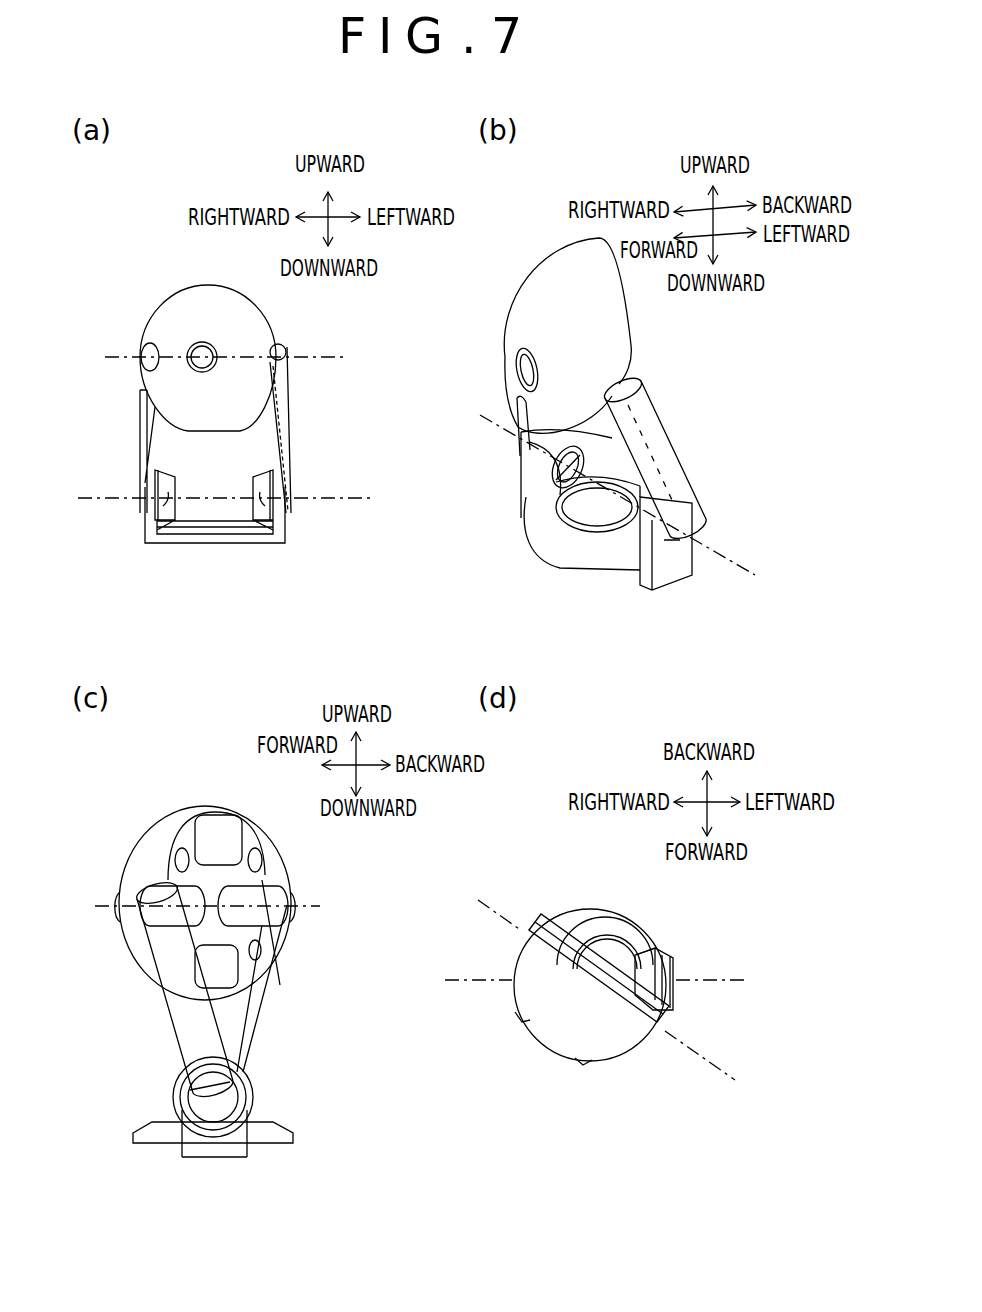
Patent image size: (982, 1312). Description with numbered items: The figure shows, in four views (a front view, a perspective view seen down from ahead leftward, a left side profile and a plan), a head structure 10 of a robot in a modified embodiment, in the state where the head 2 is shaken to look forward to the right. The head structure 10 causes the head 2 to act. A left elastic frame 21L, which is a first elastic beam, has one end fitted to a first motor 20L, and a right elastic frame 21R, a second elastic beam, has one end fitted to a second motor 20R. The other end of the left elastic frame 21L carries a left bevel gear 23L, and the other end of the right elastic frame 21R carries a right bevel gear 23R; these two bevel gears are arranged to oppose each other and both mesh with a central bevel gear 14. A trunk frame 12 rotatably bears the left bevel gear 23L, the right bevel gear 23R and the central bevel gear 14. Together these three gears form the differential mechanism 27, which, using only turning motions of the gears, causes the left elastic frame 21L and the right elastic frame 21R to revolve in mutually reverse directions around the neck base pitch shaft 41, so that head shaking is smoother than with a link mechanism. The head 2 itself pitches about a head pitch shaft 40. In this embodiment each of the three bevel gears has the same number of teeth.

The head structure 10 is at (157, 276).
The head 2 is at (218, 296).
The head pitch shaft 40 is at (330, 356).
The neck base pitch shaft 41 is at (345, 496).
The left elastic frame 21L is at (289, 381).
The right elastic frame 21R is at (140, 420).
The left bevel gear 23L is at (265, 520).
The right bevel gear 23R is at (170, 515).
The trunk frame 12 is at (190, 546).
The central bevel gear 14 is at (232, 532).
The differential mechanism 27 is at (280, 556).
The first motor 20L is at (175, 858).
The second motor 20R is at (258, 890).